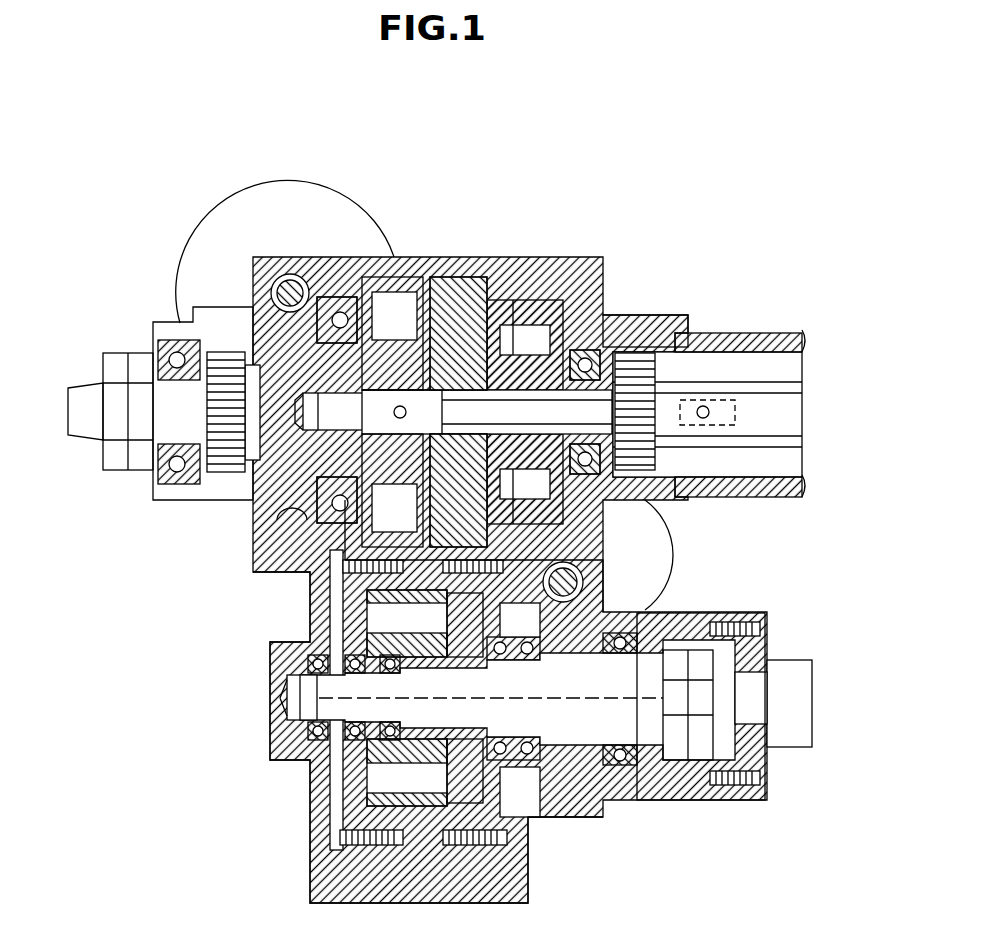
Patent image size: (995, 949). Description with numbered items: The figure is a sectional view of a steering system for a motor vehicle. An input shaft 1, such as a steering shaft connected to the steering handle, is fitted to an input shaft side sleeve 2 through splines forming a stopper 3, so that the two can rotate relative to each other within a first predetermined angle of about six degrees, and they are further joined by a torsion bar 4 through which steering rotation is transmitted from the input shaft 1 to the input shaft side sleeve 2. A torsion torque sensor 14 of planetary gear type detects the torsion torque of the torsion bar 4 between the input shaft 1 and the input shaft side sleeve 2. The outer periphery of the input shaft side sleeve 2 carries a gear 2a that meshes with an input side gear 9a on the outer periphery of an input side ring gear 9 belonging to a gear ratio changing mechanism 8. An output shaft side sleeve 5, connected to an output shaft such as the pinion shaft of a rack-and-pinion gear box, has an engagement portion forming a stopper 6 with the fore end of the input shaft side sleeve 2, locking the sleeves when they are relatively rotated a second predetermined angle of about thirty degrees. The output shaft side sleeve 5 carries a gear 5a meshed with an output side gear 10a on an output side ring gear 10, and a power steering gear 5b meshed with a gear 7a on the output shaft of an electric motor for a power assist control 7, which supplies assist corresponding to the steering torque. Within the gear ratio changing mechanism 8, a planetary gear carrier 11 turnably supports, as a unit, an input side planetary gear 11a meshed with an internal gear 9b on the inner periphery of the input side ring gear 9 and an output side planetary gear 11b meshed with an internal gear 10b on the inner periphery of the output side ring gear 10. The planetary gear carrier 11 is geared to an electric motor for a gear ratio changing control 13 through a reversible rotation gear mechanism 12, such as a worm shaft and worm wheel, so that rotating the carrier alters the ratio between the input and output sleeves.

The input shaft 1 is at (782, 380).
The input shaft side sleeve 2 is at (478, 300).
The gear 2a is at (512, 300).
The stopper 3 is at (447, 305).
The torsion bar 4 is at (600, 395).
The output shaft side sleeve 5 is at (242, 345).
The gear 5a is at (420, 330).
The power steering gear 5b is at (250, 540).
The stopper 6 is at (405, 300).
The electric motor for a power assist control 7 is at (360, 205).
The gear 7a is at (290, 274).
The gear ratio changing mechanism 8 is at (308, 878).
The input side ring gear 9 is at (583, 577).
The input side gear 9a is at (560, 553).
The internal gear 9b is at (520, 706).
The output side ring gear 10 is at (338, 588).
The output side gear 10a is at (338, 560).
The internal gear 10b is at (325, 622).
The planetary gear carrier 11 is at (624, 745).
The input side planetary gear 11a is at (527, 850).
The output side planetary gear 11b is at (370, 790).
The reversible rotation gear mechanism 12 is at (585, 586).
The electric motor for a gear ratio changing control 13 is at (680, 563).
The torsion torque sensor 14 is at (578, 298).